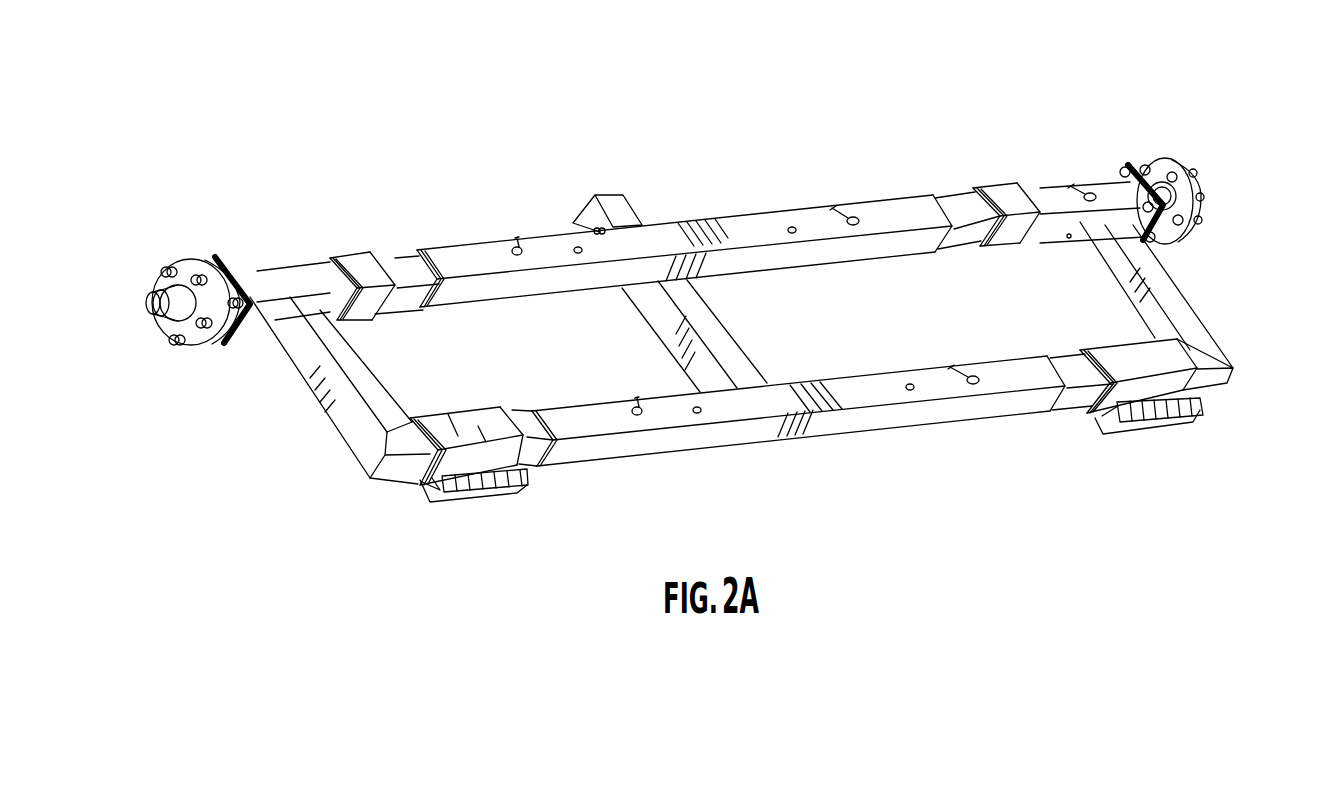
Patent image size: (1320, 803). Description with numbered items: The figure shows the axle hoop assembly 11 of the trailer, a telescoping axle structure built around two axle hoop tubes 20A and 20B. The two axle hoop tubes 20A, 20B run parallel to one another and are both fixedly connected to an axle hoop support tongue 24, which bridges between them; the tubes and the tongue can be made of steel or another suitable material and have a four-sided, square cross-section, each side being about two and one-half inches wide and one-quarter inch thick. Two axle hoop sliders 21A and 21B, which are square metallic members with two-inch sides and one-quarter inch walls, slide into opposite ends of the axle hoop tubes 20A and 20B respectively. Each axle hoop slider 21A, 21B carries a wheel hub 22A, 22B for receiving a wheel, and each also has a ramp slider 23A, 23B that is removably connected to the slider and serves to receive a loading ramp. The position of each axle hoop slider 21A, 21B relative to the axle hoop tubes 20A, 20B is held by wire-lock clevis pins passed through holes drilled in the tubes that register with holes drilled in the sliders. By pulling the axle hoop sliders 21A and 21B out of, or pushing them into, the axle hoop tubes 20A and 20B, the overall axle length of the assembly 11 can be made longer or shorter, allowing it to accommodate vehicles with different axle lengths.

The axle hoop assembly 11 is at (386, 128).
The axle hoop tube 20A is at (730, 232).
The axle hoop tube 20B is at (875, 418).
The axle hoop slider 21A is at (320, 393).
The axle hoop slider 21B is at (1180, 300).
The wheel hub 22A is at (186, 275).
The wheel hub 22B is at (1157, 172).
The ramp slider 23A is at (470, 472).
The ramp slider 23B is at (1165, 420).
The axle hoop support tongue 24 is at (612, 200).